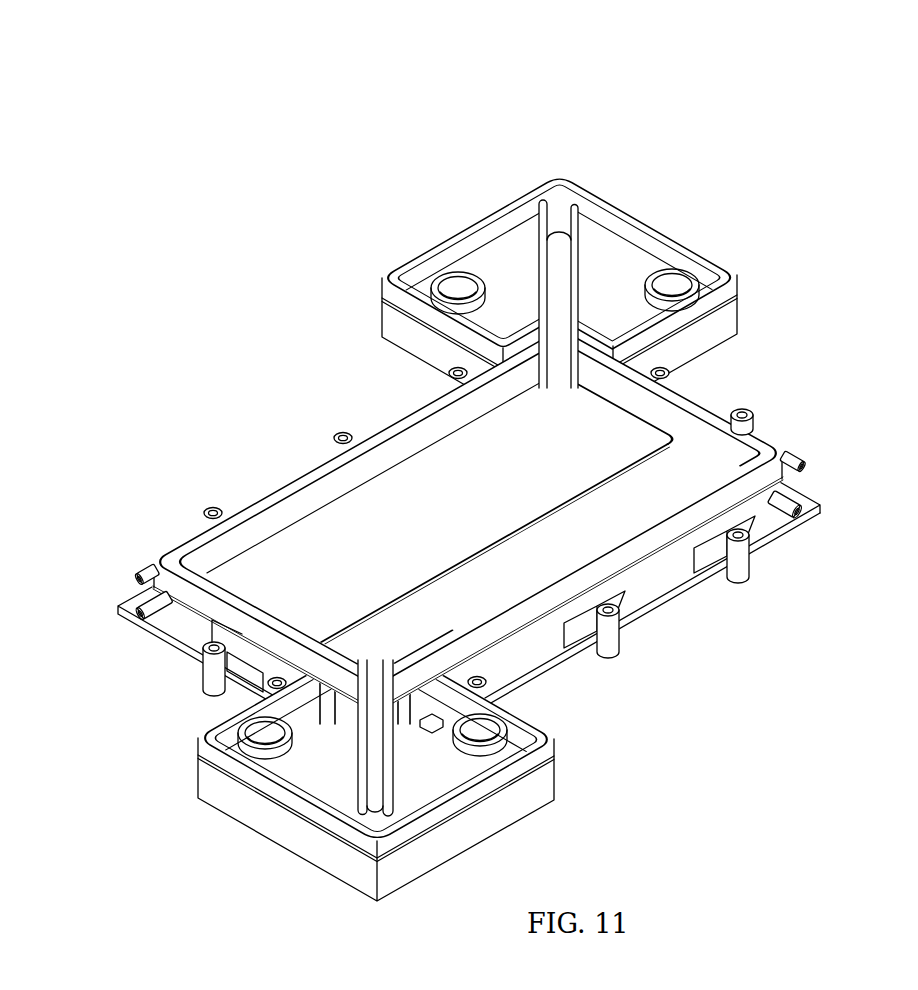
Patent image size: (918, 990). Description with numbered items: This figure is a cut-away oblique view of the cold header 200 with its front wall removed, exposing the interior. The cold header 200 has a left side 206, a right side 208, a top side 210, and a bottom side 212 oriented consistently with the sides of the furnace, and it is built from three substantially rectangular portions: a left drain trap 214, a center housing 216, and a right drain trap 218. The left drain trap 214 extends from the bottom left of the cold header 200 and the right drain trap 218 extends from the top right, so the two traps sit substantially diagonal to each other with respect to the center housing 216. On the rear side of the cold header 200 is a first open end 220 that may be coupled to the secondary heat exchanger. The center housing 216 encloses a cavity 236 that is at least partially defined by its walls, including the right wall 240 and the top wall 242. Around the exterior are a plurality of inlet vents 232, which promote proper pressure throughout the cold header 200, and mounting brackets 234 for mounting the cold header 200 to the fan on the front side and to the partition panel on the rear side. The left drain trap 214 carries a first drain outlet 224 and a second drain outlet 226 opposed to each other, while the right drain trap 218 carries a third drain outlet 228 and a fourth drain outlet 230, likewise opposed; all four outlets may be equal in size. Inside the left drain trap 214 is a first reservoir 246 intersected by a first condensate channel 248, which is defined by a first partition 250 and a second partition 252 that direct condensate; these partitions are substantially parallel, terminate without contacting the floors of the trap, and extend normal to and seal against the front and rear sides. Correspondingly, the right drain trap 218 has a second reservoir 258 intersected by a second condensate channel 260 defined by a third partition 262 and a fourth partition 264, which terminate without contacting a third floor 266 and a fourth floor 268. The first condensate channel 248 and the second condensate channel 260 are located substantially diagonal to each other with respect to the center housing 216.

The cold header 200 is at (474, 468).
The left side 206 is at (131, 741).
The right side 208 is at (597, 265).
The top side 210 is at (468, 459).
The bottom side 212 is at (645, 607).
The left drain trap 214 is at (410, 773).
The center housing 216 is at (652, 578).
The right drain trap 218 is at (741, 316).
The first open end 220 is at (556, 515).
The first drain outlet 224 is at (468, 780).
The second drain outlet 226 is at (292, 780).
The third drain outlet 228 is at (438, 278).
The fourth drain outlet 230 is at (692, 270).
The inlet vents 232 is at (146, 562).
The mounting brackets 234 is at (447, 373).
The cavity 236 is at (350, 507).
The right wall 240 is at (710, 445).
The top wall 242 is at (271, 512).
The first reservoir 246 is at (327, 778).
The first condensate channel 248 is at (379, 774).
The first partition 250 is at (416, 795).
The second partition 252 is at (347, 795).
The second reservoir 258 is at (542, 292).
The second condensate channel 260 is at (560, 362).
The third partition 262 is at (530, 222).
The fourth partition 264 is at (585, 215).
The third floor 266 is at (456, 252).
The fourth floor 268 is at (645, 248).